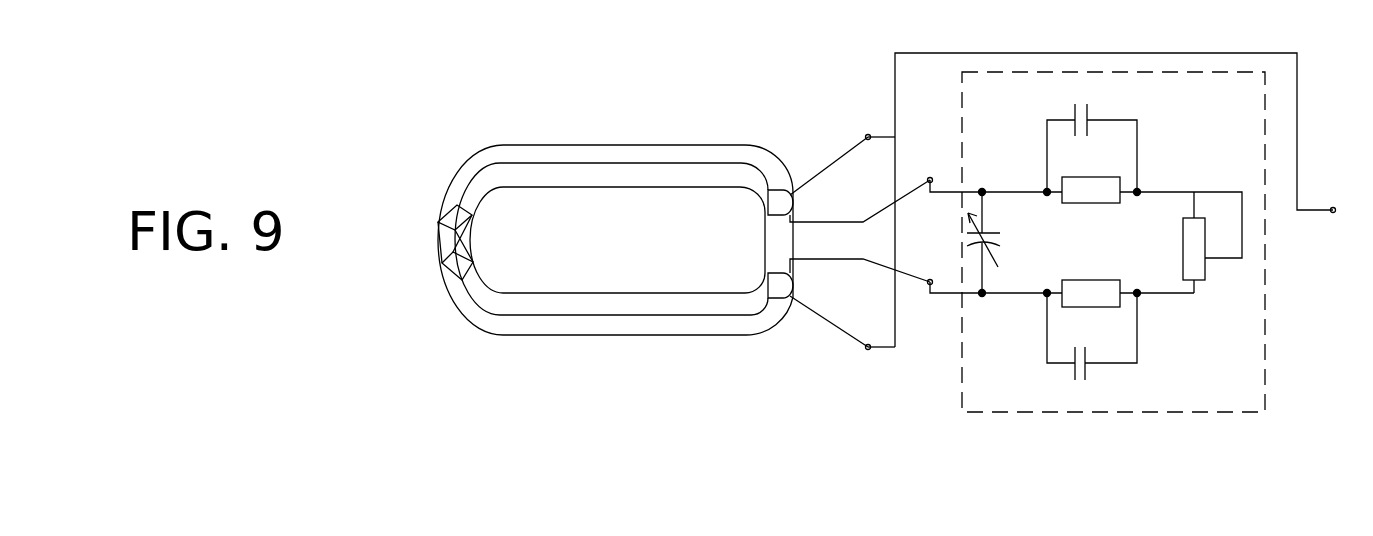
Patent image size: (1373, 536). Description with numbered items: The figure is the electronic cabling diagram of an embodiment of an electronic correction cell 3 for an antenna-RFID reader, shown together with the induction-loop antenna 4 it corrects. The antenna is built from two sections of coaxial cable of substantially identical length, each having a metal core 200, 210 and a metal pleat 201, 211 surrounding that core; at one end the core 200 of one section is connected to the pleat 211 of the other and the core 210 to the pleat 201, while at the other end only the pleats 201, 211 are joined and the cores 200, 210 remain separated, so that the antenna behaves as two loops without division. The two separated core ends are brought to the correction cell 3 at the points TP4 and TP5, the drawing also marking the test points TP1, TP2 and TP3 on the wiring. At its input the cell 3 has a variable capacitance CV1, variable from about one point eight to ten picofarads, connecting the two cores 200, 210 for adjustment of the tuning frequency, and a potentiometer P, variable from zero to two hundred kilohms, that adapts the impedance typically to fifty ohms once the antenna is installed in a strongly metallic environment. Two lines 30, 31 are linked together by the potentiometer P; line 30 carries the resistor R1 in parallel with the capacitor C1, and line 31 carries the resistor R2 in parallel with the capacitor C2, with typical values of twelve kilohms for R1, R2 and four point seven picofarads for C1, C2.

The coil assembly 4 is at (502, 358).
The metal pleat 201 is at (483, 147).
The metal pleat 211 is at (597, 337).
The metal core 200 is at (463, 235).
The metal core 210 is at (442, 243).
The electronic correction cell 3 is at (1192, 403).
The line 30 is at (1017, 188).
The line 31 is at (1017, 297).
The test point 1 TP1 is at (867, 123).
The test point 2 TP2 is at (870, 364).
The test point 3 TP3 is at (1124, 200).
The point TP4 is at (946, 168).
The point TP5 is at (946, 302).
The capacitor C1 is at (1092, 134).
The capacitor C2 is at (1092, 350).
The resistor R1 is at (1091, 176).
The resistor R2 is at (1091, 278).
The variable capacitance CV1 is at (1010, 242).
The potentiometer P is at (1182, 242).